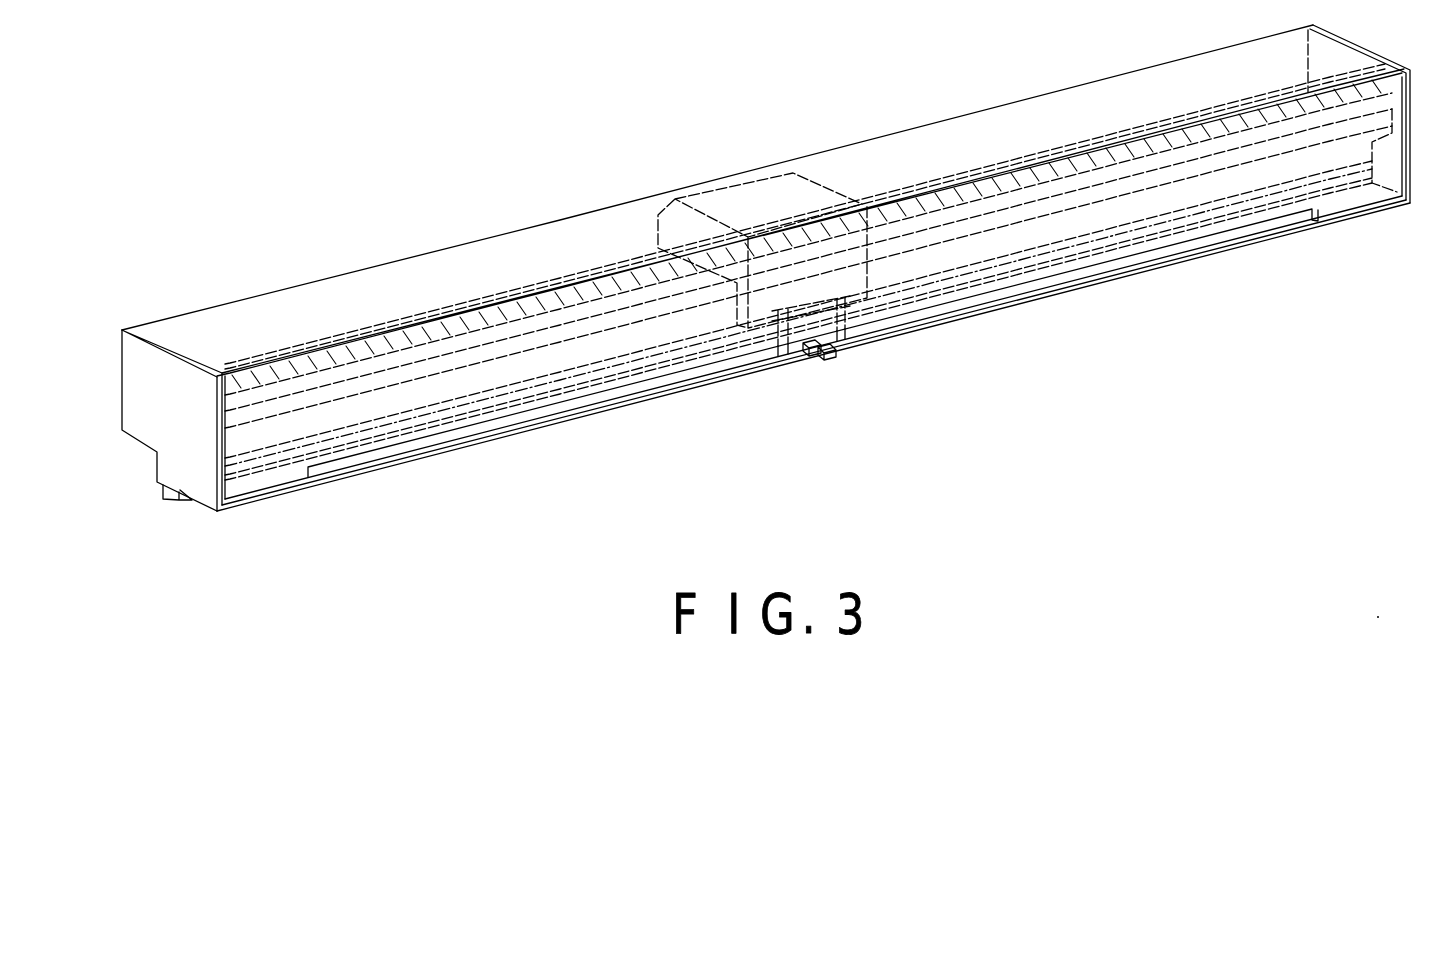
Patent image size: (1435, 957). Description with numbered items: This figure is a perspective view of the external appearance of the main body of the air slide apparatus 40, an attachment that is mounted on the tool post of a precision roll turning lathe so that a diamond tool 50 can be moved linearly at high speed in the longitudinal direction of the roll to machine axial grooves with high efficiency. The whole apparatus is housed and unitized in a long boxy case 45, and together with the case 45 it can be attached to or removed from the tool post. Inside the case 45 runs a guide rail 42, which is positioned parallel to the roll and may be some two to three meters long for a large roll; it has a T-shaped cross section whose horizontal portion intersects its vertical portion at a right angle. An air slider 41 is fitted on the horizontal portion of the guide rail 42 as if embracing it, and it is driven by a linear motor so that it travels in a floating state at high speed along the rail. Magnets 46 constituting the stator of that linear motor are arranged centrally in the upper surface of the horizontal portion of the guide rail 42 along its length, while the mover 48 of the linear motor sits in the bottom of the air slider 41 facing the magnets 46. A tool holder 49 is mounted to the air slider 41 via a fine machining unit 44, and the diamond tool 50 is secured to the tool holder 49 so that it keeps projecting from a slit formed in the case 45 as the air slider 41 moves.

The air slide apparatus 40 is at (766, 264).
The air slider 41 is at (758, 206).
The guide rail 42 is at (572, 337).
The fine machining unit 44 is at (846, 347).
The case 45 is at (386, 274).
The magnets 46 is at (1244, 122).
The mover 48 is at (485, 430).
The tool holder 49 is at (807, 352).
The diamond tool 50 is at (828, 356).